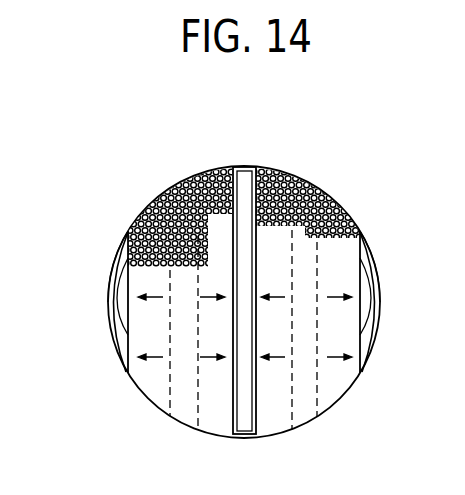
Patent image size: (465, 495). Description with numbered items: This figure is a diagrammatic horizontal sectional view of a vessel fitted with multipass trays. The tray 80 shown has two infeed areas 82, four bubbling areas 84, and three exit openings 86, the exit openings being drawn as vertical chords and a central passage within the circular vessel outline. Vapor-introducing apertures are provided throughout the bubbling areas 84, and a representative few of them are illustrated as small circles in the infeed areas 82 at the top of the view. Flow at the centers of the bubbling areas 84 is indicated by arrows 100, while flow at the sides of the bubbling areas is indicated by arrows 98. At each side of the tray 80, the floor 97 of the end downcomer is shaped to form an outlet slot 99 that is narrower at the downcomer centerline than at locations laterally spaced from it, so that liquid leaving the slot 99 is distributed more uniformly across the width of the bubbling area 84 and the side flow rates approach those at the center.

The tray 80 is at (118, 181).
The infeed area 82 is at (178, 183).
The bubbling area 84 is at (150, 378).
The exit opening 86 is at (242, 182).
The floor of end downcomer 97 is at (115, 289).
The arrows indicating flow at sides of bubbling areas 98 is at (160, 356).
The outlet slot 99 is at (120, 255).
The arrows indicating flow at centers of bubbling areas 100 is at (330, 298).